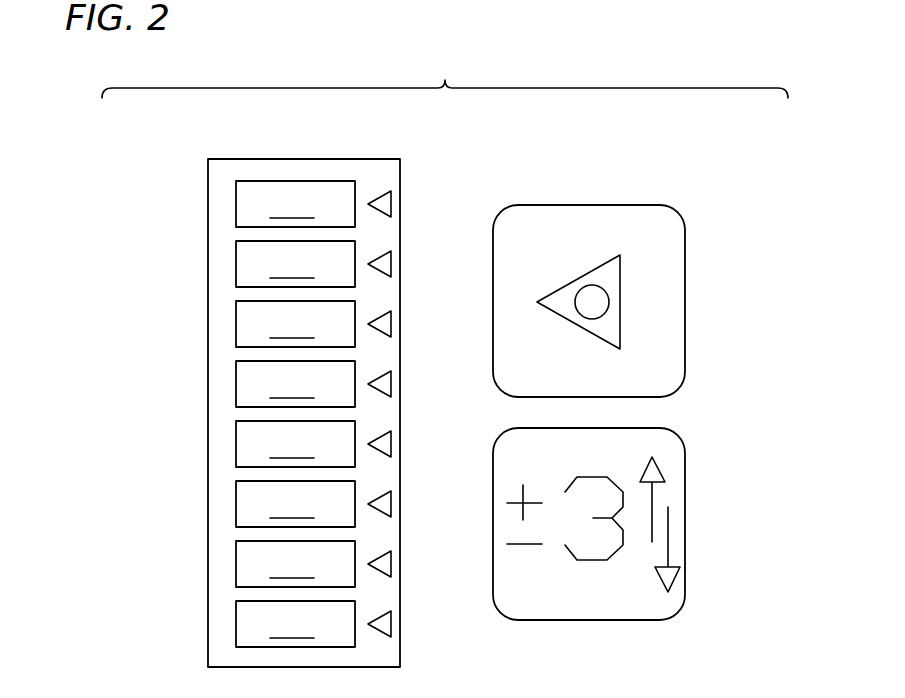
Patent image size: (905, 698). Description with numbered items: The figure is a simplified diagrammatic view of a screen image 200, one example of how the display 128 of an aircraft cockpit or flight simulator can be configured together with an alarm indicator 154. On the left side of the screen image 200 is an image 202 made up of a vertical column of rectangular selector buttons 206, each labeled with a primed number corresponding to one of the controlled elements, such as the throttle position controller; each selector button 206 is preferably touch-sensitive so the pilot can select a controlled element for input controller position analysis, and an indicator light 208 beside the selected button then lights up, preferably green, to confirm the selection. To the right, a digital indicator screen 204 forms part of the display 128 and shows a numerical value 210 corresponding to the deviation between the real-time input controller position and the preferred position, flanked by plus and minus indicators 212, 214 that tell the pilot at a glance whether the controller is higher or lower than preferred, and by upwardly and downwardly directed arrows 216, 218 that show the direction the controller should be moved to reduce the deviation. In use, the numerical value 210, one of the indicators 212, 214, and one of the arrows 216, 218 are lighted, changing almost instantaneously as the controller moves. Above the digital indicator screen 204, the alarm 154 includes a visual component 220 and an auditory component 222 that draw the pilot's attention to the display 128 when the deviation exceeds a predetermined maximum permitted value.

The screen image 200 is at (445, 72).
The image 202 is at (228, 163).
The selector buttons 206 is at (247, 447).
The indicator light 208 is at (383, 265).
The display 128 is at (483, 442).
The alarm indicator 154 is at (673, 218).
The visual component 220 is at (557, 300).
The auditory component 222 is at (590, 307).
The digital indicator screen 204 is at (667, 437).
The plus indicator 212 is at (513, 503).
The minus indicator 214 is at (518, 545).
The numerical value 210 is at (597, 562).
The upwardly directed arrow 216 is at (652, 500).
The downwardly directed arrow 218 is at (667, 532).